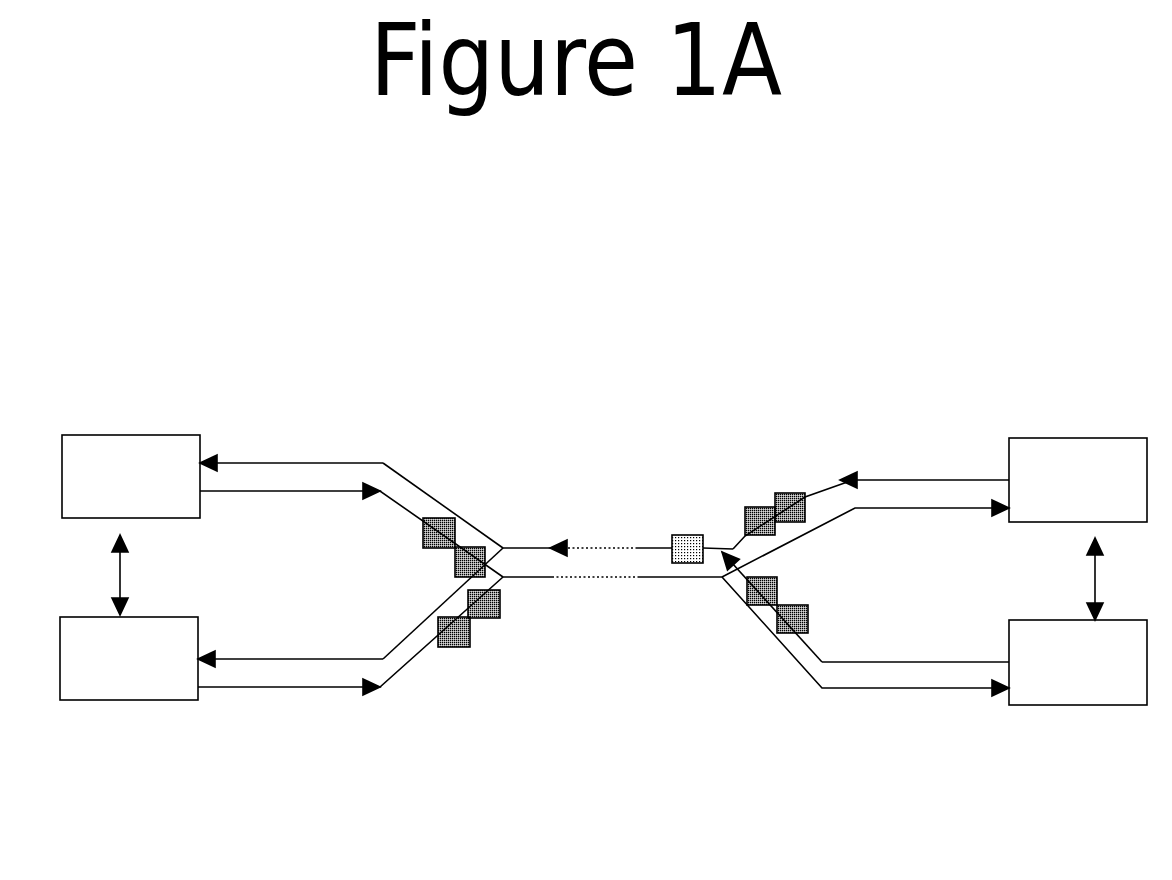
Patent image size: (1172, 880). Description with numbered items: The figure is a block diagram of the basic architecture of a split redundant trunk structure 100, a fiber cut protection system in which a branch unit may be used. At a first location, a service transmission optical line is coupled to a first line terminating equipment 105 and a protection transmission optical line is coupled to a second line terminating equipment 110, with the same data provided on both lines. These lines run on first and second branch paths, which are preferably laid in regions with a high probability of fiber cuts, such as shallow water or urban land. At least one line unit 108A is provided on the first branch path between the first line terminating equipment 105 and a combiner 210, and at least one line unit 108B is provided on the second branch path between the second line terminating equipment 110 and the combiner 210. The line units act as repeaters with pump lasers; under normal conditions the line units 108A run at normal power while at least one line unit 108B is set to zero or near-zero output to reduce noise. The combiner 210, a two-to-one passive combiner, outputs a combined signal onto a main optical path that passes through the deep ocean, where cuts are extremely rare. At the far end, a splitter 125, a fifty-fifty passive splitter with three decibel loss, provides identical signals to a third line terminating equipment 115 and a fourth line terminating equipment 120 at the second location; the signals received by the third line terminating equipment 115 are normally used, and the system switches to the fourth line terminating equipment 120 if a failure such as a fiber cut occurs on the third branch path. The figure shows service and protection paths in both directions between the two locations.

The split redundant trunk structure 100 is at (603, 548).
The first line terminating equipment 105 is at (1078, 480).
The second line terminating equipment 110 is at (1078, 662).
The third line terminating equipment 115 is at (131, 476).
The fourth line terminating equipment 120 is at (129, 658).
The splitter 125 is at (490, 523).
The combiner 210 is at (734, 522).
The line unit 108A is at (762, 489).
The line unit 108B is at (790, 586).